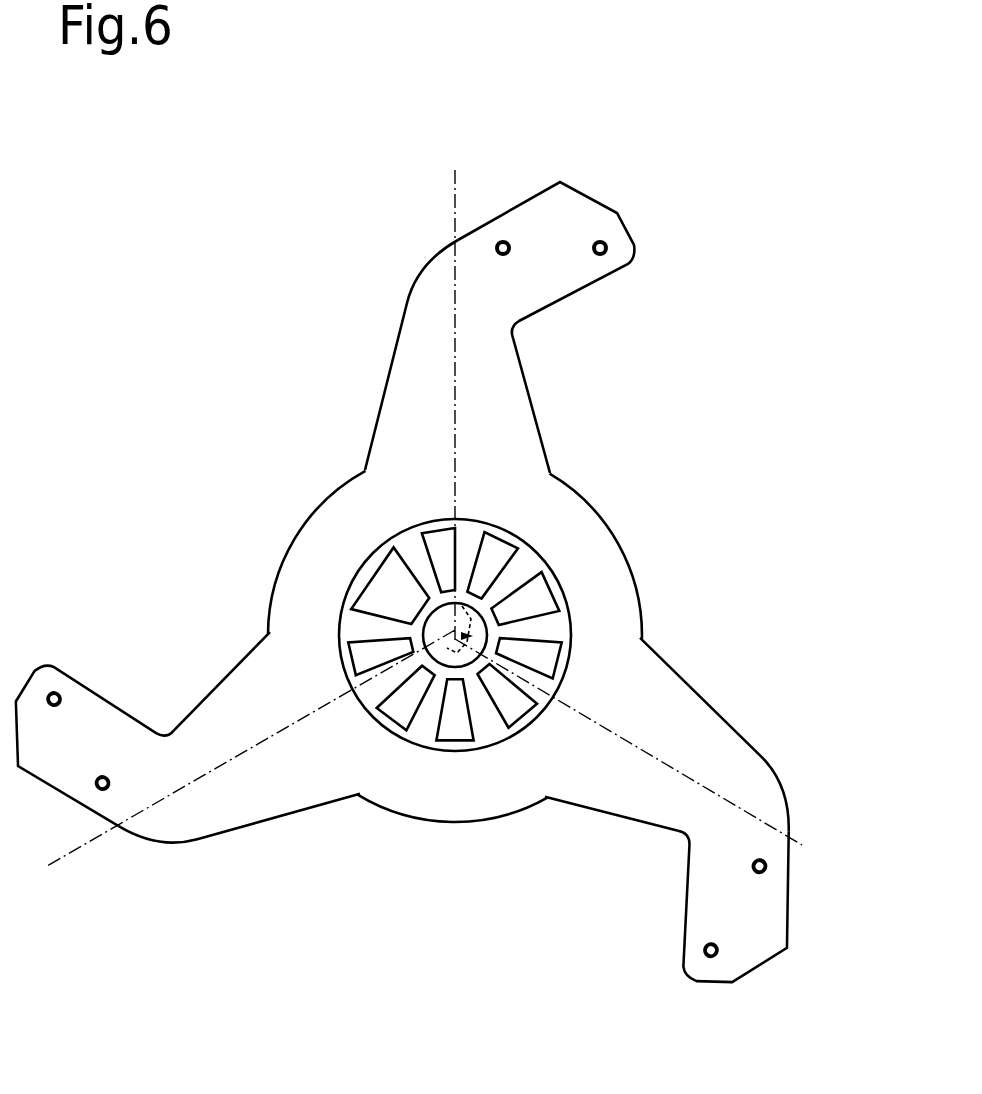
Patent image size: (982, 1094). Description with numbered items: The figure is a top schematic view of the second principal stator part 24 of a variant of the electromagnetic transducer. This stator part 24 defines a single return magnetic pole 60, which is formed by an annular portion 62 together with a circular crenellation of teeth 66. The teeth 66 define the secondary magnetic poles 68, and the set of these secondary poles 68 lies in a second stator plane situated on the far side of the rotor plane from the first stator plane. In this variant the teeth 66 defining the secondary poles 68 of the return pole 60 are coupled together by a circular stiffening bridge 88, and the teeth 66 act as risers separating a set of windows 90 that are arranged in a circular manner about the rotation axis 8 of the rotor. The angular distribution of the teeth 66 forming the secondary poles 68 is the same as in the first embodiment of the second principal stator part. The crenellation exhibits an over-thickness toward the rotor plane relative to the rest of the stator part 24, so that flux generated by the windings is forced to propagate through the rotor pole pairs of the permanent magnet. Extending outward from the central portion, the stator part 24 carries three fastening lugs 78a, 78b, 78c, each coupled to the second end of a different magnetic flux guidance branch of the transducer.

The rotation axis 8 is at (452, 634).
The second principal stator part 24 is at (510, 432).
The return magnetic pole 60 is at (592, 568).
The annular portion 62 is at (473, 793).
The teeth 66 is at (513, 573).
The secondary magnetic poles 68 is at (418, 563).
The fastening lug 78a is at (78, 728).
The fastening lug 78b is at (738, 928).
The fastening lug 78c is at (589, 233).
The circular stiffening bridge 88 is at (478, 636).
The windows 90 is at (490, 566).